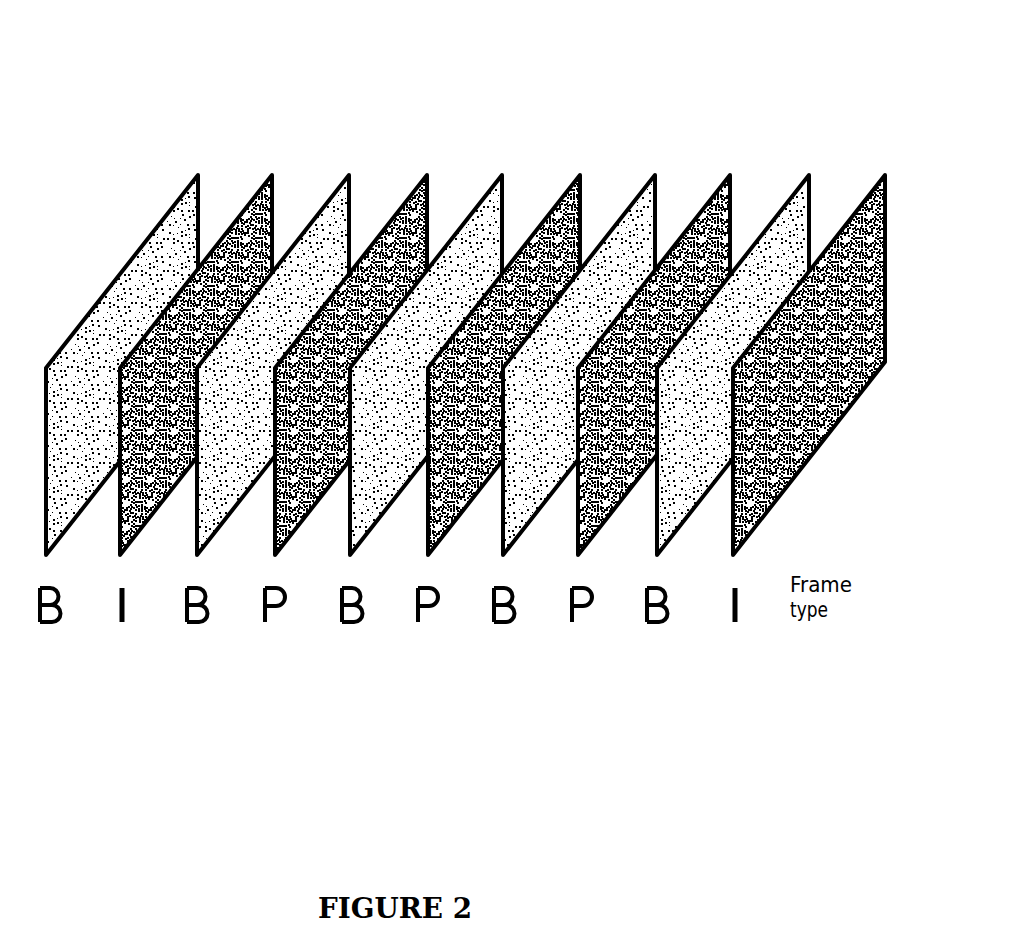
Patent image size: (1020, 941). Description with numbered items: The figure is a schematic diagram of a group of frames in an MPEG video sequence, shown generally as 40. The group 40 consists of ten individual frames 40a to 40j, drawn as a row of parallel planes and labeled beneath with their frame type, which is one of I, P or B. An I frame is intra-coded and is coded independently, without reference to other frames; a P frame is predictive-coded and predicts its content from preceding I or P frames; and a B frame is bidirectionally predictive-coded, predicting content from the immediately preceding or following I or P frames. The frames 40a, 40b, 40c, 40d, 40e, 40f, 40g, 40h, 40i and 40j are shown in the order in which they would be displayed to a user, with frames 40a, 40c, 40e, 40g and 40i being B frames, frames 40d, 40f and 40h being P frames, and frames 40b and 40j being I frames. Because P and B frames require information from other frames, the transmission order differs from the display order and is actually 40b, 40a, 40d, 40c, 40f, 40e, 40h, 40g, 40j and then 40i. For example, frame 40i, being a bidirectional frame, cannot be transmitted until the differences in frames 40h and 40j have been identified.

The group of frames 40 is at (680, 117).
The frame 40a is at (56, 688).
The frame 40b is at (122, 688).
The frame 40c is at (203, 688).
The frame 40d is at (285, 688).
The frame 40e is at (350, 688).
The frame 40f is at (430, 688).
The frame 40g is at (496, 688).
The frame 40h is at (577, 688).
The frame 40i is at (657, 688).
The frame 40j is at (739, 688).